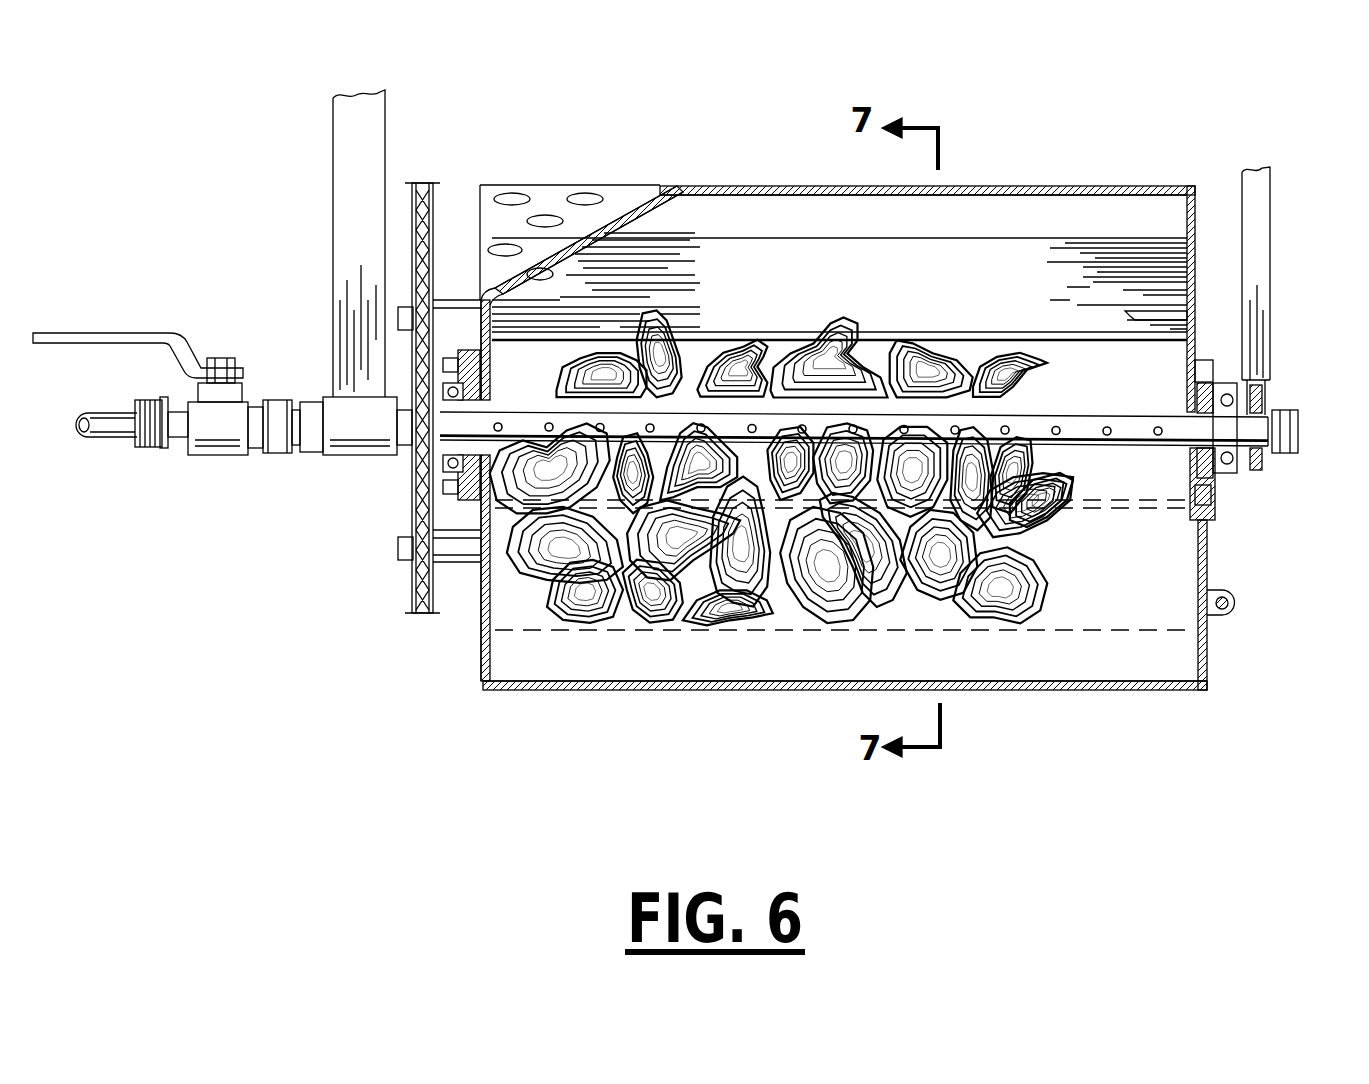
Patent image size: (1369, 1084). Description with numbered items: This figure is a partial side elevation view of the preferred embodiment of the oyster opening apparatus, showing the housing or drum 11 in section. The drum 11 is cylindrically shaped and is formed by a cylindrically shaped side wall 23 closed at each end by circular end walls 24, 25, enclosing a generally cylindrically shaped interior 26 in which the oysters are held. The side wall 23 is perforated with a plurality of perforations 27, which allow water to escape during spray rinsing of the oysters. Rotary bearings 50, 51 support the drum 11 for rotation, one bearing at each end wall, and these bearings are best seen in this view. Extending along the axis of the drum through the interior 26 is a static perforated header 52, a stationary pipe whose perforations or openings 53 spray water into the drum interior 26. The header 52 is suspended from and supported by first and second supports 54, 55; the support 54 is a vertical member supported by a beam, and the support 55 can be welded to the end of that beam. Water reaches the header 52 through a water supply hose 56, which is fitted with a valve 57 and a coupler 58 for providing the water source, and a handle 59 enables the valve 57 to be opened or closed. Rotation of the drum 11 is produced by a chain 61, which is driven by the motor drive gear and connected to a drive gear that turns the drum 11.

The housing or drum 11 is at (1072, 185).
The cylindrical side wall 23 is at (647, 215).
The circular end wall 24 is at (493, 376).
The circular end wall 25 is at (1195, 210).
The interior 26 is at (730, 218).
The perforations 27 is at (517, 194).
The rotary bearing 50 is at (1240, 470).
The rotary bearing 51 is at (445, 475).
The static perforated header 52 is at (1140, 413).
The perforations or openings 53 is at (549, 432).
The first support 54 is at (358, 172).
The second support 55 is at (1262, 243).
The water supply hose 56 is at (108, 438).
The valve 57 is at (212, 437).
The coupler 58 is at (280, 453).
The handle 59 is at (91, 333).
The chain 61 is at (437, 196).